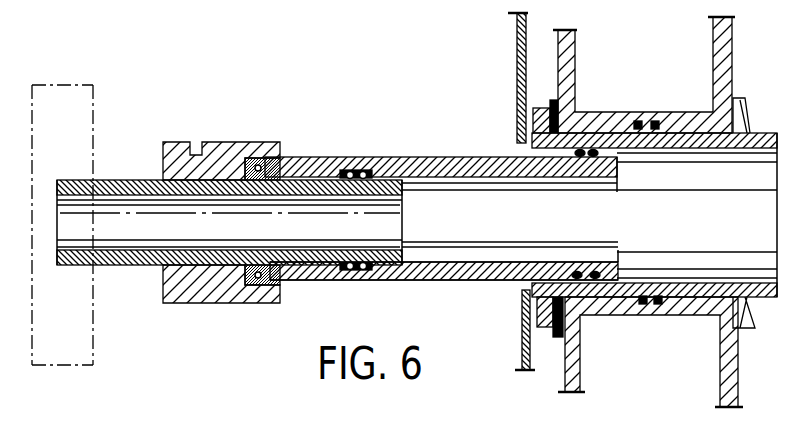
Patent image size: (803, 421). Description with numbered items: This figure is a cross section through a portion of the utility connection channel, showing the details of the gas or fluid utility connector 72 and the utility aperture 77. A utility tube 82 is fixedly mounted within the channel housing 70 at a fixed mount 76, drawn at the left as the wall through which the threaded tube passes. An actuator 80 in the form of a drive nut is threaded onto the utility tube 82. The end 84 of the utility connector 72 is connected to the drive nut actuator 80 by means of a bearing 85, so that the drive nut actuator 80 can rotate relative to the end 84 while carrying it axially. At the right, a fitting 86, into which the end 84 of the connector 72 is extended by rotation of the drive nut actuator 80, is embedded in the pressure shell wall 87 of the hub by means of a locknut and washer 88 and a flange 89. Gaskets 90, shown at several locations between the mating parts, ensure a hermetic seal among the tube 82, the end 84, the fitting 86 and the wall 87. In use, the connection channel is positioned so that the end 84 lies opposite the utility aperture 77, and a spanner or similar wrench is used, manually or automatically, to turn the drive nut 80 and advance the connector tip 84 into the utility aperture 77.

The channel housing 70 is at (518, 343).
The gas or fluid utility connector 72 is at (358, 87).
The fixed mount 76 is at (95, 324).
The utility aperture 77 is at (515, 283).
The actuator drive nut 80 is at (228, 141).
The utility tube 82 is at (114, 179).
The end of the utility connector 84 is at (323, 156).
The bearing 85 is at (256, 141).
The fitting 86 is at (690, 131).
The pressure shell wall 87 is at (720, 380).
The locknut and washer 88 is at (550, 336).
The flange 89 is at (741, 100).
The gaskets 90 is at (353, 172).